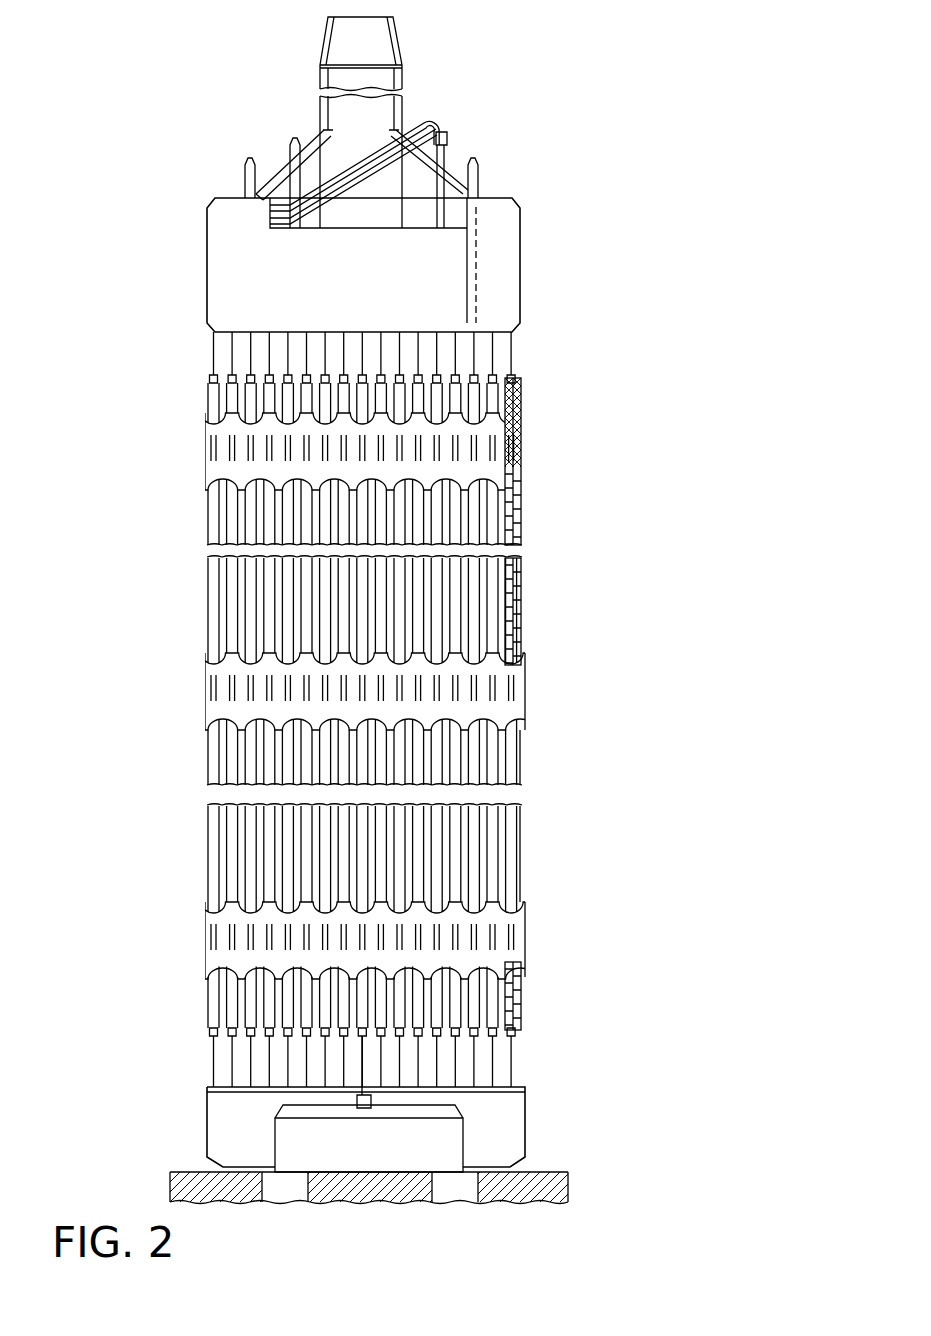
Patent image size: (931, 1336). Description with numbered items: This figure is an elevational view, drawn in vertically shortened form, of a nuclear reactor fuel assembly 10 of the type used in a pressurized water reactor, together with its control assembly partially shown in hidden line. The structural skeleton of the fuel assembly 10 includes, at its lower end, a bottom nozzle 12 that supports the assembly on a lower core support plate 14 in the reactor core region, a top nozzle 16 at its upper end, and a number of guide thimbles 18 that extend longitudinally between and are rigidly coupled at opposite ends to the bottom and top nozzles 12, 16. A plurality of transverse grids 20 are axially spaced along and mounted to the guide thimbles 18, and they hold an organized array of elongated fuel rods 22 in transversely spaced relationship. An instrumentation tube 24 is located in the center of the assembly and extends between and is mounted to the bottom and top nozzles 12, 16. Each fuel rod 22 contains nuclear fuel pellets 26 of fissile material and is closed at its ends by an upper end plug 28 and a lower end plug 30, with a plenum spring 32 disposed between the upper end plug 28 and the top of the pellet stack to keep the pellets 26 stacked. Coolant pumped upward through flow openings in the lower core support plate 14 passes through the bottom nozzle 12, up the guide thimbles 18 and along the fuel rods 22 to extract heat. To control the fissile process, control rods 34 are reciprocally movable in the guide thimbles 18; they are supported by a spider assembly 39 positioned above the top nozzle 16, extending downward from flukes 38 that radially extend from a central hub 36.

The fuel assembly 10 is at (607, 158).
The bottom nozzle 12 is at (530, 1133).
The lower core support plate 14 is at (540, 1172).
The top nozzle 16 is at (195, 262).
The guide thimbles 18 is at (213, 355).
The transverse grids 20 is at (205, 462).
The fuel rods 22 is at (527, 595).
The instrumentation tube 24 is at (357, 1108).
The nuclear fuel pellets 26 is at (523, 538).
The upper end plug 28 is at (522, 380).
The lower end plug 30 is at (526, 1022).
The plenum spring 32 is at (522, 453).
The control rods 34 is at (478, 298).
The central hub 36 is at (320, 108).
The flukes 38 is at (323, 136).
The spider assembly 39 is at (435, 80).